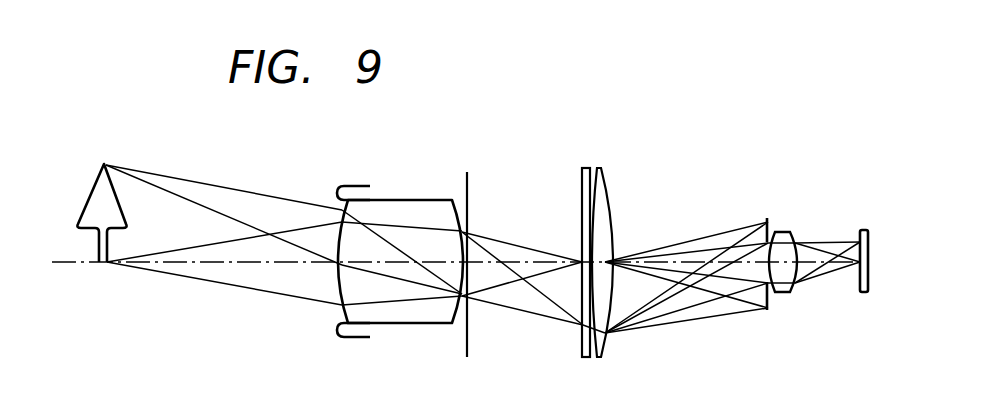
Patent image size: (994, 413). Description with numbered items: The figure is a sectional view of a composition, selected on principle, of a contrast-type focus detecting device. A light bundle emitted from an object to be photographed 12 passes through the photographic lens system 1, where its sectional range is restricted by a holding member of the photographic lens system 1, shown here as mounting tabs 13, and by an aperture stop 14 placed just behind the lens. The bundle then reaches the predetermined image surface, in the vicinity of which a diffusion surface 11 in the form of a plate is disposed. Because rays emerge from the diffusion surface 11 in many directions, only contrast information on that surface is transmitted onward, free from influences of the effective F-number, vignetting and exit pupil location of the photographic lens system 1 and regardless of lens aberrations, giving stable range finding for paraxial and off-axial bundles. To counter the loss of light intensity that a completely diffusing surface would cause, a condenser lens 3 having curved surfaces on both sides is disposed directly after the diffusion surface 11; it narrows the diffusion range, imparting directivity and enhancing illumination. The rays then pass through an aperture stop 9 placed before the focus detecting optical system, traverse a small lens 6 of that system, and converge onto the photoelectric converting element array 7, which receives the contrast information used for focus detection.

The object to be photographed 12 is at (93, 174).
The photographic lens system 1 is at (416, 200).
The lens mount tabs 13 is at (350, 192).
The aperture stop 14 is at (468, 178).
The diffusion surface 11 is at (582, 181).
The condenser lens 3 is at (610, 183).
The aperture stop 9 is at (767, 218).
The relay lens 6 is at (780, 230).
The photoelectric converting element array 7 is at (862, 230).